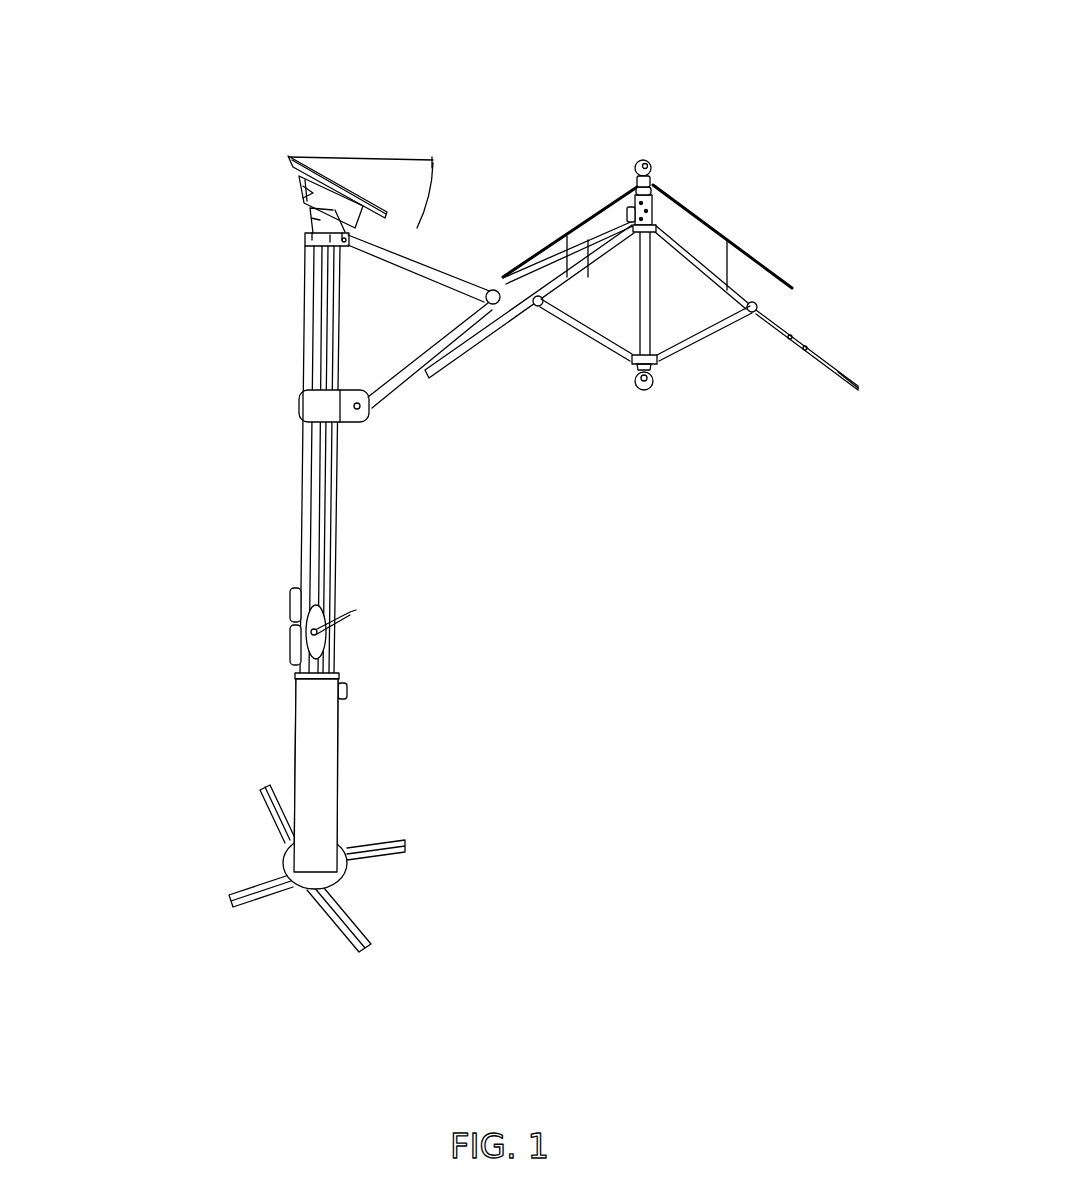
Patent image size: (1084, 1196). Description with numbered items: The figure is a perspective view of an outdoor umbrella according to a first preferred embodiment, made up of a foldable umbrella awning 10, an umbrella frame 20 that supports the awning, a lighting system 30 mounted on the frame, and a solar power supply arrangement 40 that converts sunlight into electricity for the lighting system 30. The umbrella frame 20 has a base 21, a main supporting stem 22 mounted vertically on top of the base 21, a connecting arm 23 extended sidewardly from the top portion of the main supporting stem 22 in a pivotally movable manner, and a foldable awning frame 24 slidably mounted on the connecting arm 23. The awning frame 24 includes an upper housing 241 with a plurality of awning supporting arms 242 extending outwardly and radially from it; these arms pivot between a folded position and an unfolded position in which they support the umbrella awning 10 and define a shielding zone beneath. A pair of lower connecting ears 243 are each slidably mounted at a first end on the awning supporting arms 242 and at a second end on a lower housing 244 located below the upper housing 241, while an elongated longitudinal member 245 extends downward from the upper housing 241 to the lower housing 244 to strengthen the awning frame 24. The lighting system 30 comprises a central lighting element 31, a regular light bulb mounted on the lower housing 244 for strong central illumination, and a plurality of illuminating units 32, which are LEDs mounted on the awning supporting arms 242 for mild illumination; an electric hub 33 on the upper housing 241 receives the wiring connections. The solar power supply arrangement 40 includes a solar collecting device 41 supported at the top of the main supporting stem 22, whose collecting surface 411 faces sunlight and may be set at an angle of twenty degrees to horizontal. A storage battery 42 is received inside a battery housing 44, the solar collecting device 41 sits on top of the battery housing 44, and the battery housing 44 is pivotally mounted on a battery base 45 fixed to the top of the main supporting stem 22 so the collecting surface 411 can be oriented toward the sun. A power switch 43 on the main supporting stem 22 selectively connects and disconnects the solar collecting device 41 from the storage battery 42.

The umbrella awning 10 is at (742, 208).
The umbrella frame 20 is at (190, 527).
The base 21 is at (398, 837).
The main supporting stem 22 is at (322, 572).
The connecting arm 23 is at (428, 267).
The awning frame 24 is at (785, 220).
The lighting system 30 is at (777, 477).
The central lighting element 31 is at (650, 163).
The illuminating units 32 is at (832, 370).
The electric hub 33 is at (652, 232).
The solar power supply arrangement 40 is at (271, 116).
The solar collecting device 41 is at (297, 172).
The collecting surface 411 is at (353, 200).
The storage battery 42 is at (313, 193).
The power switch 43 is at (298, 643).
The battery housing 44 is at (297, 183).
The battery base 45 is at (303, 233).
The upper housing 241 is at (652, 227).
The awning supporting arms 242 is at (833, 363).
The lower connecting ears 243 is at (580, 335).
The lower housing 244 is at (652, 383).
The elongated longitudinal member 245 is at (640, 335).